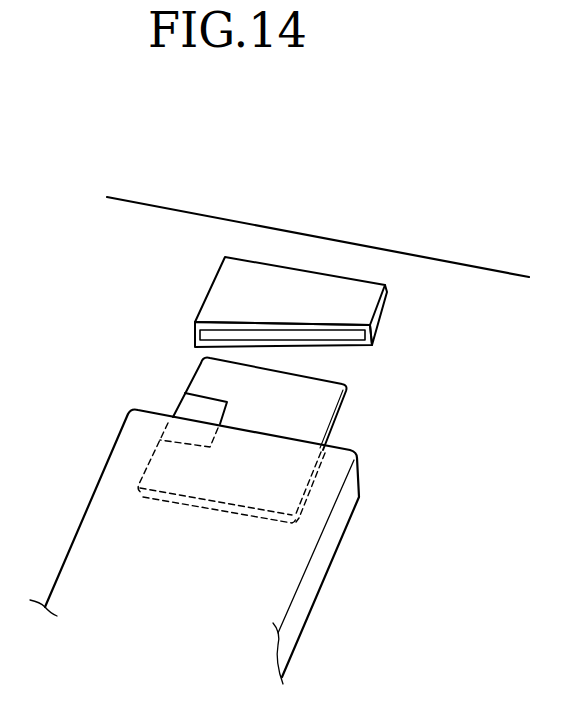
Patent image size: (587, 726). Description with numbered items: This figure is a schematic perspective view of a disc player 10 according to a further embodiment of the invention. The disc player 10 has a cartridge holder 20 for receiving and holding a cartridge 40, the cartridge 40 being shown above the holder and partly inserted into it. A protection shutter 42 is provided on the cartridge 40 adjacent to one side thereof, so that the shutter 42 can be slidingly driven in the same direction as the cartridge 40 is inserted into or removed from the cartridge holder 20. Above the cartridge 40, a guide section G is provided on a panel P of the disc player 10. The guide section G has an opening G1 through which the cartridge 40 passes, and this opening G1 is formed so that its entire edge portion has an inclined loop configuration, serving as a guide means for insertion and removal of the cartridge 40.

The disc player 10 is at (305, 216).
The cartridge holder 20 is at (328, 545).
The cartridge 40 is at (318, 404).
The protection shutter 42 is at (185, 405).
The guide section G is at (332, 295).
The opening G1 is at (247, 335).
The panel P is at (168, 217).